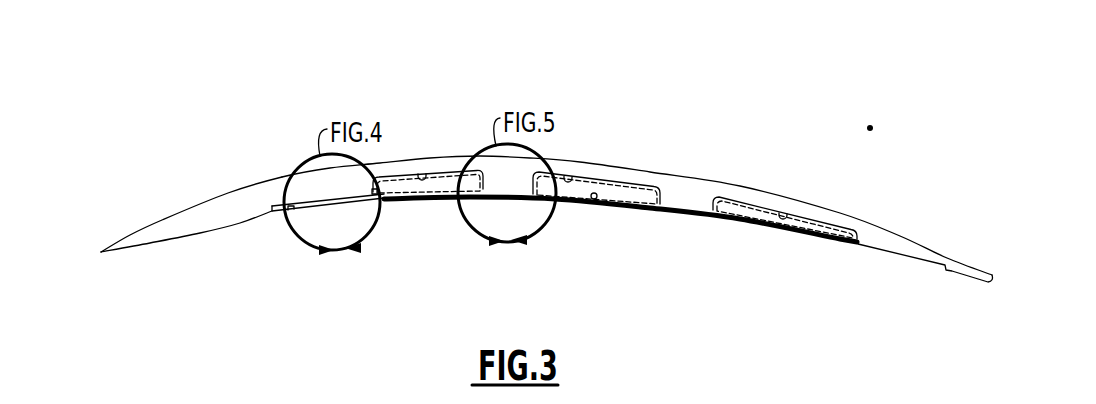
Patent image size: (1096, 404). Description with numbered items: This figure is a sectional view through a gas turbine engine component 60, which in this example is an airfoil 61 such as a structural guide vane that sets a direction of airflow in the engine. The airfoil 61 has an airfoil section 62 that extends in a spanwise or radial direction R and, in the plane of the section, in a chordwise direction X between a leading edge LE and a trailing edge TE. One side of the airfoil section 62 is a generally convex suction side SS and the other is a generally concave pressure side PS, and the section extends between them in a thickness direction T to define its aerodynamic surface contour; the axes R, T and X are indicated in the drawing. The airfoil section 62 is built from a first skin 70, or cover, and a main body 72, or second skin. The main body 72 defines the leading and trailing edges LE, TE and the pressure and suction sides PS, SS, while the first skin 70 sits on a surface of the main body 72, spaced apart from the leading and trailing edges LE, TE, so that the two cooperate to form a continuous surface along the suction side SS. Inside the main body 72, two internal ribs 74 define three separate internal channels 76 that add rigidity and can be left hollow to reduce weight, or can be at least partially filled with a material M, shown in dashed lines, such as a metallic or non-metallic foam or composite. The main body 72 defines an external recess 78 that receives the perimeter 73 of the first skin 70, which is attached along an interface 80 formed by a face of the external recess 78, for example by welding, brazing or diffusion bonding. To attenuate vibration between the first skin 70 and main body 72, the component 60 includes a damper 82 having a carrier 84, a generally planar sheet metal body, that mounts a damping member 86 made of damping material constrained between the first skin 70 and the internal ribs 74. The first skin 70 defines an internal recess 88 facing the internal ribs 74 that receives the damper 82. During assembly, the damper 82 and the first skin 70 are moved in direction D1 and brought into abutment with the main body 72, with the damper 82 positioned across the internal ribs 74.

The gas turbine engine component 60 is at (137, 164).
The airfoil 61 is at (213, 190).
The airfoil section 62 is at (682, 190).
The first skin 70 is at (757, 226).
The main body 72 is at (717, 192).
The perimeter 73 is at (291, 212).
The internal ribs 74 is at (527, 186).
The internal channels 76 is at (421, 172).
The external recess 78 is at (307, 205).
The interface 80 is at (349, 194).
The damper 82 is at (824, 264).
The carrier 84 is at (840, 232).
The damping member 86 is at (788, 236).
The internal recess 88 is at (593, 203).
The material M is at (444, 168).
The leading edge LE is at (100, 250).
The trailing edge TE is at (990, 272).
The suction side SS is at (622, 170).
The pressure side PS is at (636, 210).
The direction D1 is at (592, 286).
The thickness direction T is at (870, 128).
The chordwise direction X is at (870, 128).
The radial direction R is at (868, 130).